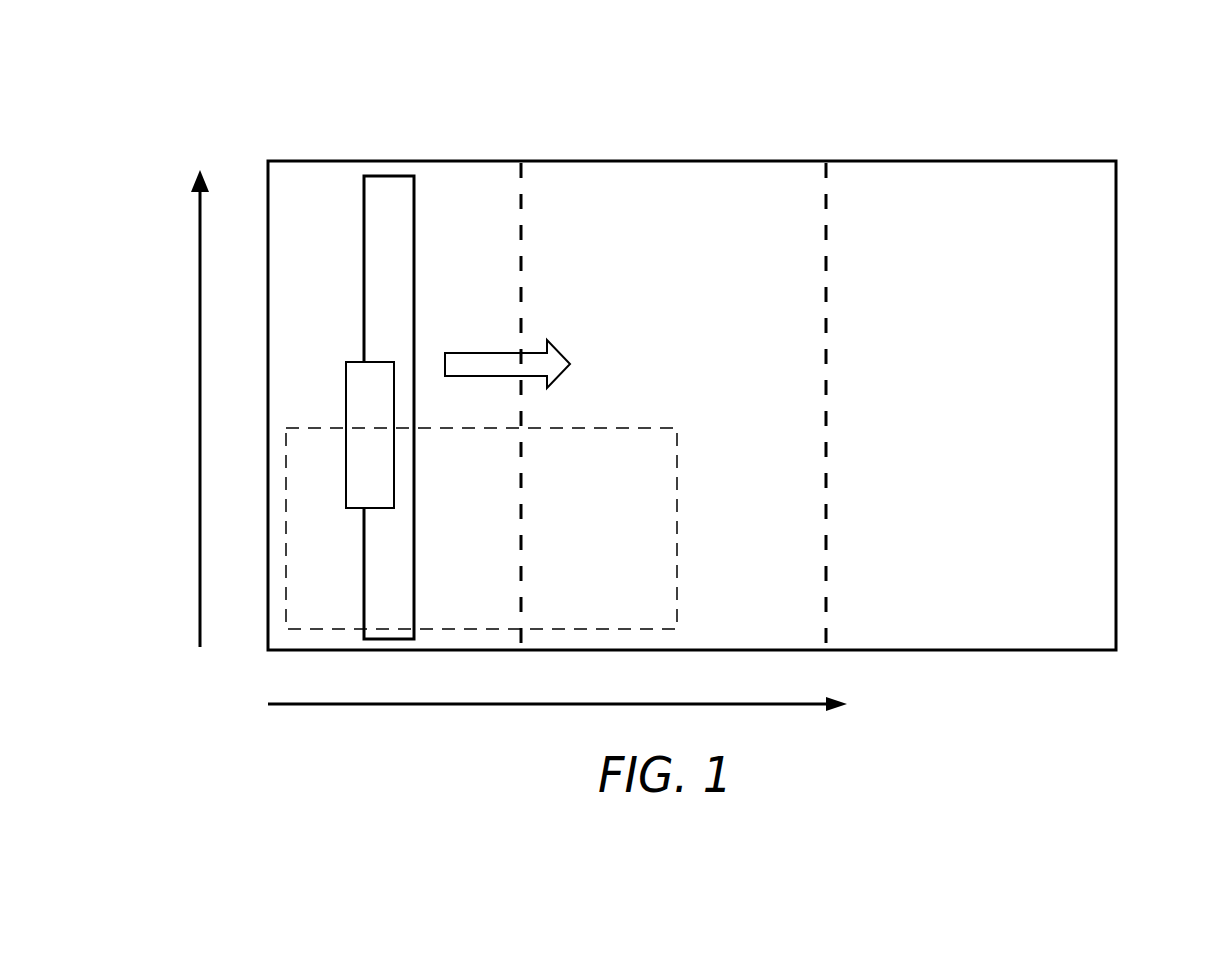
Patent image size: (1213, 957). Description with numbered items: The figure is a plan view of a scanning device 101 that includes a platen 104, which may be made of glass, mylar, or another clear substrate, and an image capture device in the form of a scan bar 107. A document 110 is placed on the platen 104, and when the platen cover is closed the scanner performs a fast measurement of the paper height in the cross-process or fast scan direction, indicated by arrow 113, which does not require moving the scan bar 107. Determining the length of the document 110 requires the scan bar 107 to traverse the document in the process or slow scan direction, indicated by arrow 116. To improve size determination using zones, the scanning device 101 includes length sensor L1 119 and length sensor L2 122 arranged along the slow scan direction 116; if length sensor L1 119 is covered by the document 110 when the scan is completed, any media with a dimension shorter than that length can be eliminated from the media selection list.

The scanning device 101 is at (784, 46).
The platen 104 is at (1118, 305).
The scan bar 107 is at (388, 176).
The document 110 is at (623, 425).
The fast scan direction arrow 113 is at (197, 390).
The slow scan direction arrow 116 is at (527, 707).
The length sensor L1 119 is at (576, 114).
The length sensor L2 122 is at (876, 115).